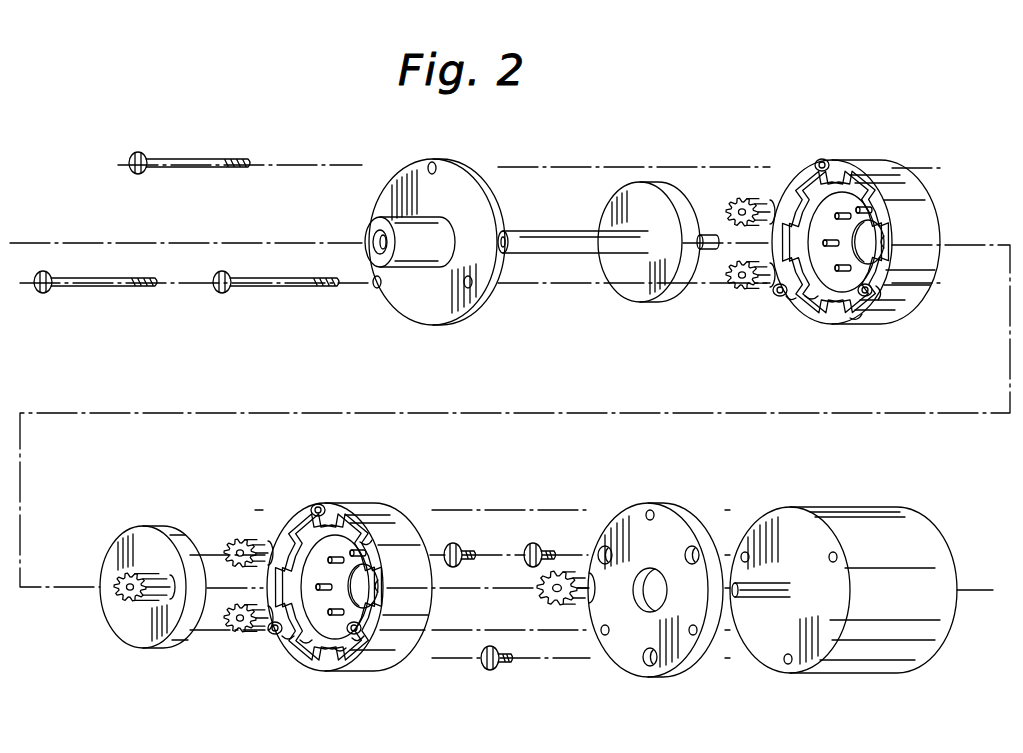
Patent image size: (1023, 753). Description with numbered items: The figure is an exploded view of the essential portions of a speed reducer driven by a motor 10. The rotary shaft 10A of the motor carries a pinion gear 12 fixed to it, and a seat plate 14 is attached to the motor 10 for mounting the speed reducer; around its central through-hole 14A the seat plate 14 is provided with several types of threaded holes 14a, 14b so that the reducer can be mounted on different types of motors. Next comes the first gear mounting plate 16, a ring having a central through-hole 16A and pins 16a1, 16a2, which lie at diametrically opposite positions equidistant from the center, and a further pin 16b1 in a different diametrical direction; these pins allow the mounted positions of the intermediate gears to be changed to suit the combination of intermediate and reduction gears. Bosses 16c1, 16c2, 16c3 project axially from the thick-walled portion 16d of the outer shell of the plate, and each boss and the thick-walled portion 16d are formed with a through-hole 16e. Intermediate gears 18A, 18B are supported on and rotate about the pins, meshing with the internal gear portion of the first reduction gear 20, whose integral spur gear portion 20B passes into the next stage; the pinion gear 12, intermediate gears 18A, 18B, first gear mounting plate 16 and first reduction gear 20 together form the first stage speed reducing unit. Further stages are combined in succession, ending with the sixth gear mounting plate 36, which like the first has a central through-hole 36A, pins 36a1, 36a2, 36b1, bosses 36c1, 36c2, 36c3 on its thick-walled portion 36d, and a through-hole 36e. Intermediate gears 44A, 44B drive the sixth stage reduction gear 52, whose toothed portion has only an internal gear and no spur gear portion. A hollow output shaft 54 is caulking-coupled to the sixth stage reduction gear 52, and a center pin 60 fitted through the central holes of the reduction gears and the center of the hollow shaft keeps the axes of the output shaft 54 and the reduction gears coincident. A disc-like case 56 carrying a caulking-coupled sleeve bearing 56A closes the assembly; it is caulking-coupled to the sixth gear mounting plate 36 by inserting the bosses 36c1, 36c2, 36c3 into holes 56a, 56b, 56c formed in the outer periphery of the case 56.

The motor 10 is at (866, 655).
The rotary shaft of the motor 10A is at (766, 598).
The pinion gear 12 is at (563, 606).
The seat plate 14 is at (690, 517).
The central through-hole 14A is at (652, 568).
The threaded hole 14a is at (650, 667).
The threaded hole 14b is at (605, 636).
The first gear mounting plate 16 is at (400, 530).
The central through-hole 16A is at (372, 612).
The pin 16a1 is at (380, 538).
The pin 16a2 is at (342, 655).
The pin 16b1 is at (332, 558).
The boss 16c1 is at (318, 503).
The boss 16c2 is at (284, 640).
The boss 16c3 is at (358, 640).
The thick-walled portion 16d is at (356, 548).
The through-hole 16e is at (310, 505).
The intermediate gear 18A is at (232, 541).
The intermediate gear 18B is at (227, 628).
The first reduction gear 20 is at (125, 622).
The spur gear portion 20B is at (140, 572).
The sixth gear mounting plate 36 is at (888, 175).
The central through-hole 36A is at (874, 237).
The pin 36a1 is at (860, 205).
The pin 36a2 is at (878, 292).
The pin 36b1 is at (830, 220).
The boss 36c1 is at (828, 163).
The boss 36c2 is at (785, 294).
The boss 36c3 is at (858, 322).
The thick-walled portion 36d is at (812, 300).
The through-hole 36e is at (820, 160).
The intermediate gear 44A is at (732, 200).
The intermediate gear 44B is at (730, 285).
The sixth stage reduction gear 52 is at (660, 185).
The hollow output shaft 54 is at (560, 253).
The case 56 is at (458, 185).
The sleeve bearing 56A is at (420, 262).
The hole 56a is at (432, 162).
The hole 56b is at (375, 287).
The hole 56c is at (468, 288).
The center pin 60 is at (705, 235).